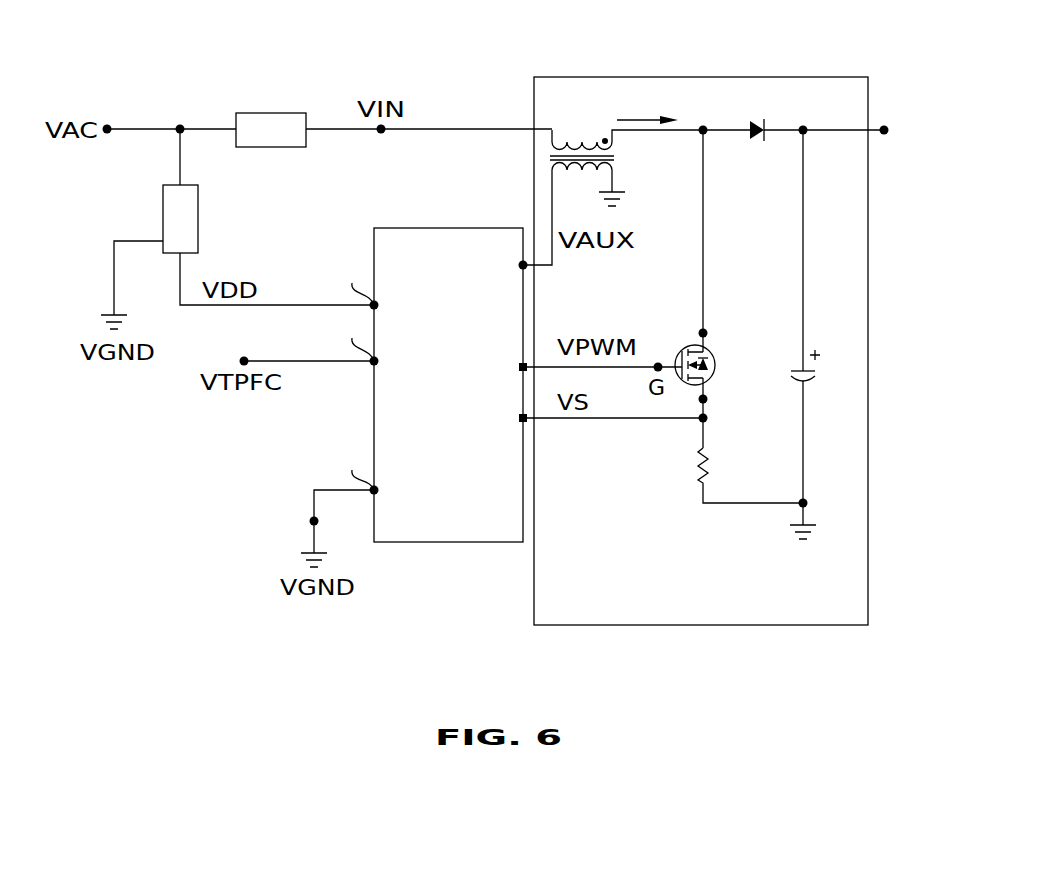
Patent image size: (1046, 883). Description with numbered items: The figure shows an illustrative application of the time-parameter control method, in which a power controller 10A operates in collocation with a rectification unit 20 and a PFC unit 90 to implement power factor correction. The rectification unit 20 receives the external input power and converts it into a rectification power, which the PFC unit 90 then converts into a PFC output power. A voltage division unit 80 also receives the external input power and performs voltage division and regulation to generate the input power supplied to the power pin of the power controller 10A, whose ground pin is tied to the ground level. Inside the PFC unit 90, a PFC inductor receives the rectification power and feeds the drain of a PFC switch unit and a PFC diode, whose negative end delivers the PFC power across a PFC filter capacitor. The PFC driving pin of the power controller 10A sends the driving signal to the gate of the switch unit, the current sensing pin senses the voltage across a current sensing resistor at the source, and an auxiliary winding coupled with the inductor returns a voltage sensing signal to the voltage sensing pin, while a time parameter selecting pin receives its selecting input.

The rectification unit 20 is at (270, 113).
The voltage division unit 80 is at (198, 218).
The power controller 10A is at (450, 228).
The PFC unit 90 is at (700, 77).